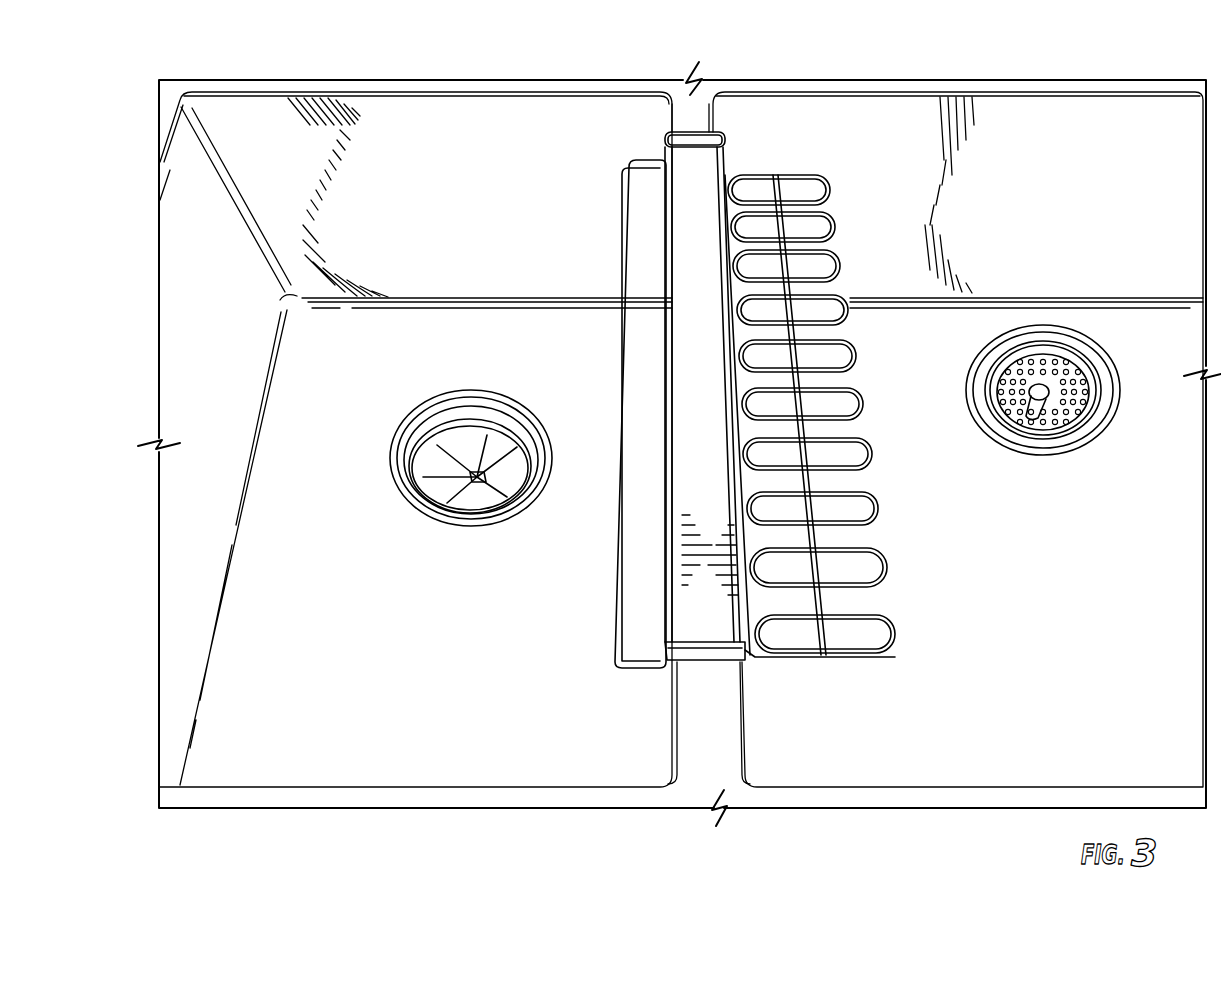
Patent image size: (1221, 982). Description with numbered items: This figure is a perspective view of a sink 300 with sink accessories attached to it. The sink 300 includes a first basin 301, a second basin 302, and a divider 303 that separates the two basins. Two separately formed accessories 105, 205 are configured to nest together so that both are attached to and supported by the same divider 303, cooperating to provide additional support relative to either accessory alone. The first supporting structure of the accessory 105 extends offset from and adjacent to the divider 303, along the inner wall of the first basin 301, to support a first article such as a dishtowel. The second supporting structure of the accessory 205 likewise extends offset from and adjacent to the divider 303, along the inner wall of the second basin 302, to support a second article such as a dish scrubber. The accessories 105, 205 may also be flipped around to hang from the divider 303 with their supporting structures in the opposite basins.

The sink 300 is at (437, 120).
The first basin 301 is at (436, 250).
The second basin 302 is at (1016, 250).
The divider 303 is at (686, 702).
The accessory 105 is at (617, 236).
The accessory 205 is at (856, 297).